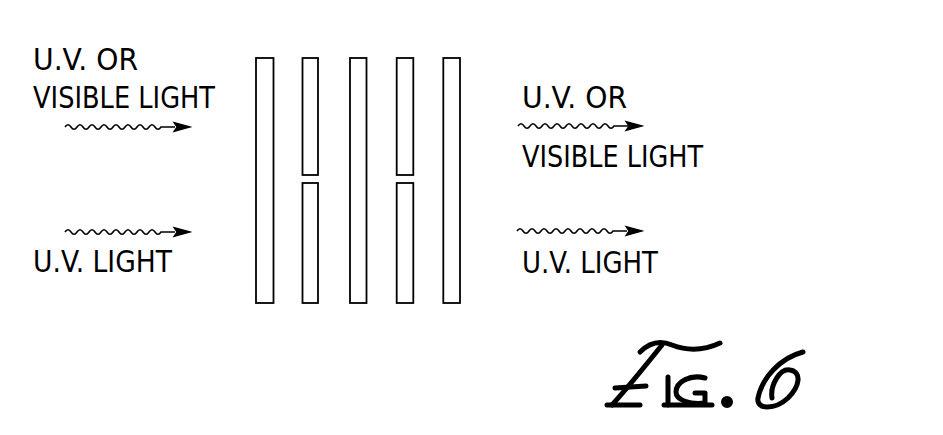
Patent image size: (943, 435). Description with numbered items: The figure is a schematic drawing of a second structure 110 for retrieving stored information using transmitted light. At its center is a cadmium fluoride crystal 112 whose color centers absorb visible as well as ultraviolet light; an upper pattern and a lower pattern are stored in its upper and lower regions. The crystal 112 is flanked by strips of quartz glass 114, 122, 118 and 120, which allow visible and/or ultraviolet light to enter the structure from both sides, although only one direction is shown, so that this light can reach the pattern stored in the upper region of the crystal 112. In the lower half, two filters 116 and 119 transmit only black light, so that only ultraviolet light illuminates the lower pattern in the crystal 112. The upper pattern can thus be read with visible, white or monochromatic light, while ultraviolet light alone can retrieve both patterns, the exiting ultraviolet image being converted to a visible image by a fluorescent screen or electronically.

The structure 110 is at (462, 74).
The cadmium fluoride crystal 112 is at (354, 58).
The strip of quartz glass 114 is at (256, 75).
The filter 116 is at (312, 295).
The strip of quartz glass 118 is at (405, 57).
The filter 119 is at (402, 297).
The strip of quartz glass 120 is at (452, 283).
The strip of quartz glass 122 is at (306, 57).